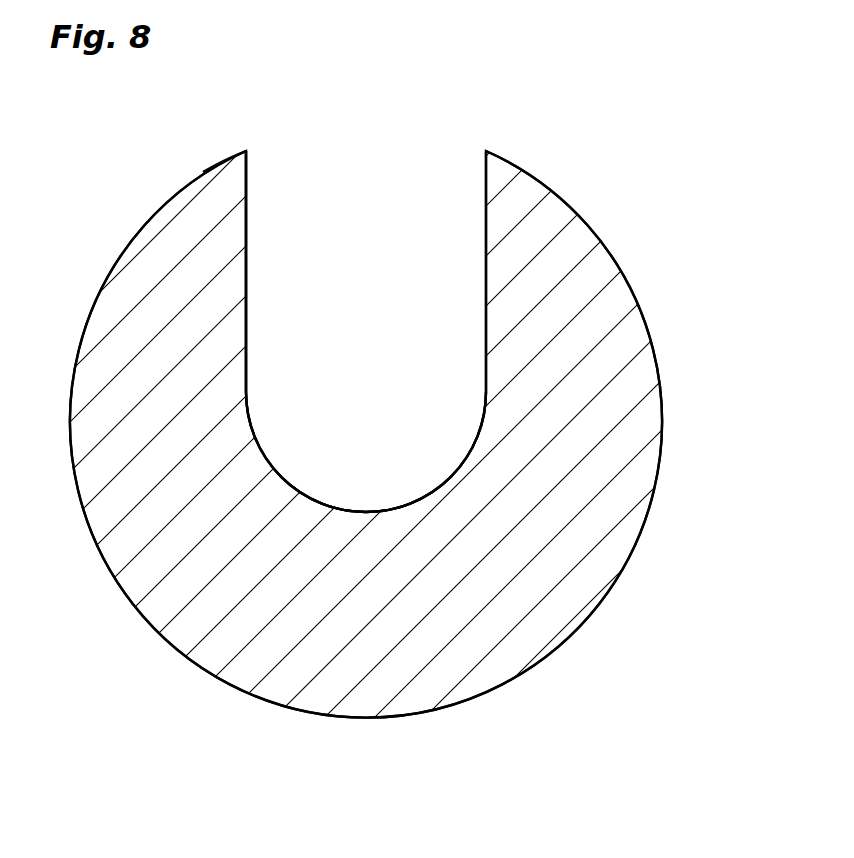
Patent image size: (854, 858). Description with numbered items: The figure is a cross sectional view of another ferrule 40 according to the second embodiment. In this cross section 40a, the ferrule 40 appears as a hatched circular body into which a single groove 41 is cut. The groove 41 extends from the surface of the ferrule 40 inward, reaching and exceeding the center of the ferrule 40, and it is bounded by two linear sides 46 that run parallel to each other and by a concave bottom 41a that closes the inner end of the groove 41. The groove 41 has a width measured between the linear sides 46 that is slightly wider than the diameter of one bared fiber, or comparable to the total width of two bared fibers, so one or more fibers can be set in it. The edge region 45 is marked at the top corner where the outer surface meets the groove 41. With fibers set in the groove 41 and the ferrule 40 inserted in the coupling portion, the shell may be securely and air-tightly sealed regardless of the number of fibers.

The ferrule 40 is at (568, 124).
The cross section 40a is at (635, 378).
The groove 41 is at (247, 217).
The concave bottom 41a is at (367, 507).
The outer edge corner 45 is at (203, 172).
The linear sides 46 is at (247, 373).